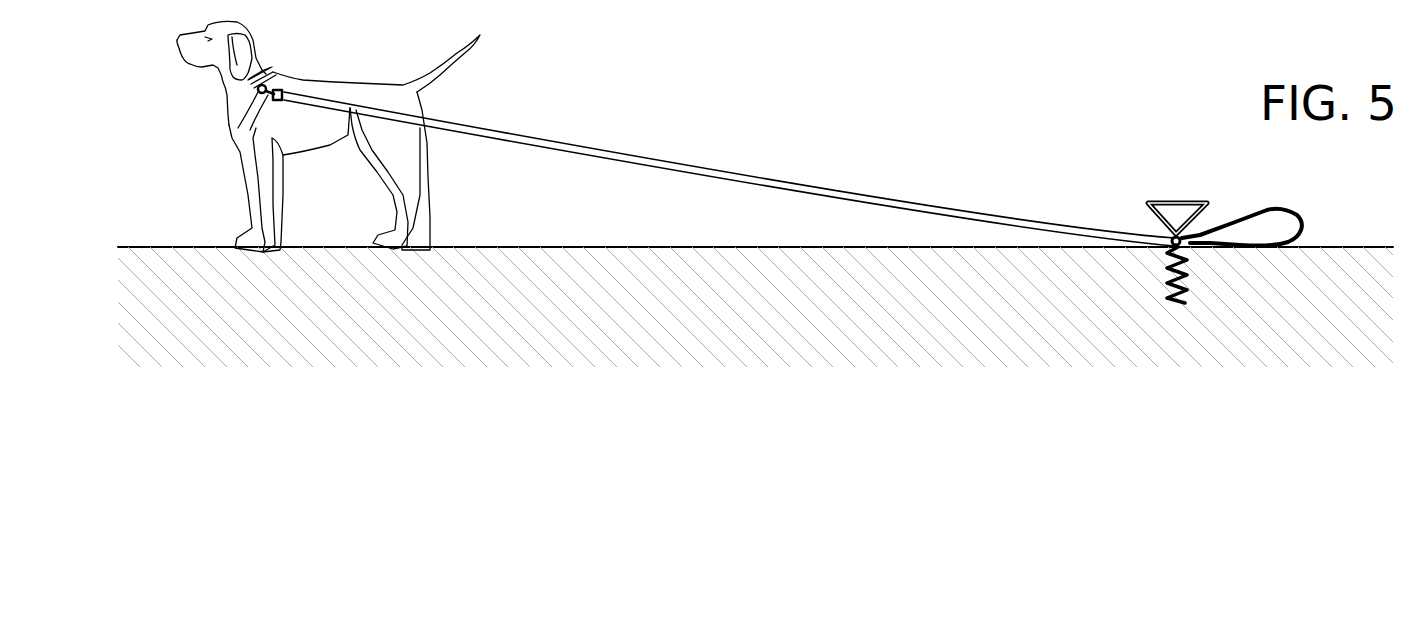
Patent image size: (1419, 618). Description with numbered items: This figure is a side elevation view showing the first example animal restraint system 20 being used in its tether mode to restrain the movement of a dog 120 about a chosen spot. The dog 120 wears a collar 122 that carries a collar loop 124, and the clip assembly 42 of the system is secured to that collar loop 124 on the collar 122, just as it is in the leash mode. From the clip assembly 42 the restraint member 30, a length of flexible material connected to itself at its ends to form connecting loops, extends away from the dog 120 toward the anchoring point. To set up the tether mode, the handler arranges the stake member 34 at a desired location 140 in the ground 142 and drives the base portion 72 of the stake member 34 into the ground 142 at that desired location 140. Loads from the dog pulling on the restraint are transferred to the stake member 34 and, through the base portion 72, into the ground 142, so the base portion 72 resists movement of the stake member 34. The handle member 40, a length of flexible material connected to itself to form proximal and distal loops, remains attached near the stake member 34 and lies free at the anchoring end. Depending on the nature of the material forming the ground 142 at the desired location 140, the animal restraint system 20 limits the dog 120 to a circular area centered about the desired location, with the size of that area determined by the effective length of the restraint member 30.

The animal restraint system 20 is at (1211, 264).
The restraint member 30 is at (657, 153).
The stake member 34 is at (1162, 326).
The handle member 40 is at (1295, 210).
The clip assembly 42 is at (257, 100).
The base portion 72 is at (1188, 287).
The dog 120 is at (350, 90).
The collar 122 is at (230, 93).
The collar loop 124 is at (268, 68).
The desired location 140 is at (1172, 182).
The ground 142 is at (677, 260).